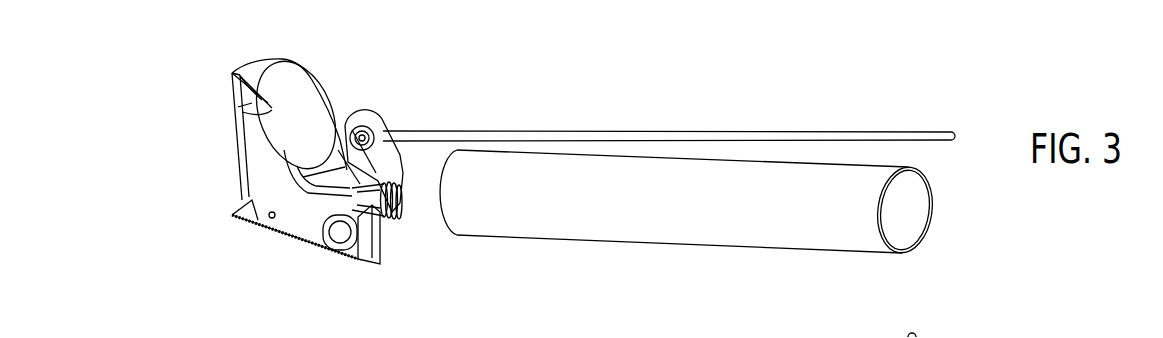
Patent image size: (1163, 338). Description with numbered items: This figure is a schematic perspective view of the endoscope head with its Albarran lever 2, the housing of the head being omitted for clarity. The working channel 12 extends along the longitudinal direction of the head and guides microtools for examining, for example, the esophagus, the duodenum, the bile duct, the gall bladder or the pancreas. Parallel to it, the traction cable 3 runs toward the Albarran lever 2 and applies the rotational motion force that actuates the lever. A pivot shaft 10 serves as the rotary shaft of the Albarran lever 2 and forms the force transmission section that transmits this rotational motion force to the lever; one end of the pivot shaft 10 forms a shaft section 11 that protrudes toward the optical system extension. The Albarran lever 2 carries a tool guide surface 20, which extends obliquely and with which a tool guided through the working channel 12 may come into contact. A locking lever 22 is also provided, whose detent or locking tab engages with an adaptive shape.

The Albarran lever 2 is at (263, 153).
The tool guide surface 20 is at (295, 113).
The locking lever 22 is at (293, 237).
The shaft section 11 is at (337, 236).
The pivot shaft 10 is at (390, 213).
The traction cable 3 is at (883, 131).
The working channel 12 is at (907, 211).